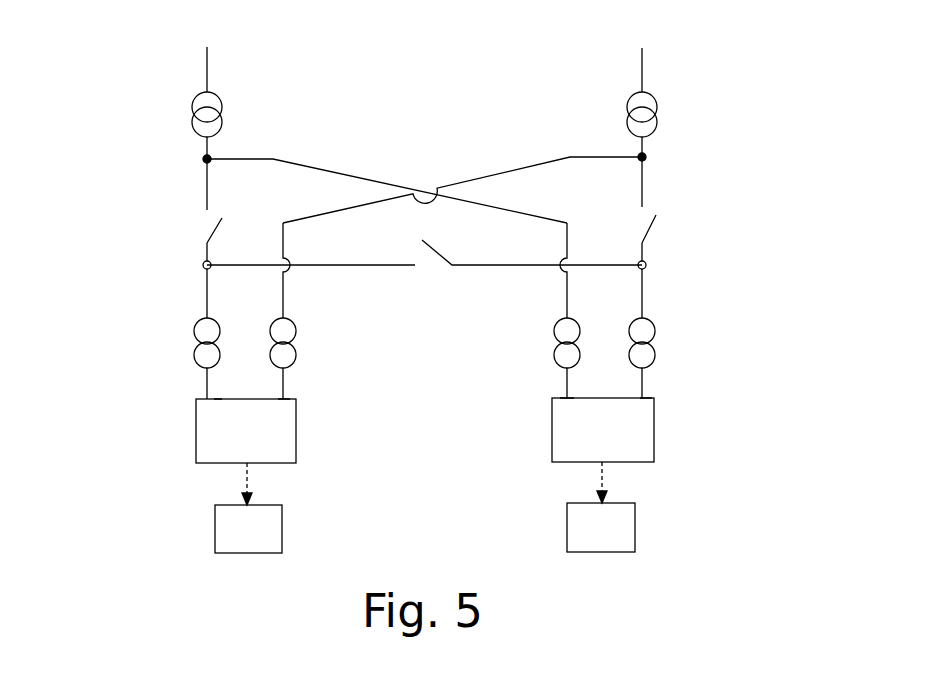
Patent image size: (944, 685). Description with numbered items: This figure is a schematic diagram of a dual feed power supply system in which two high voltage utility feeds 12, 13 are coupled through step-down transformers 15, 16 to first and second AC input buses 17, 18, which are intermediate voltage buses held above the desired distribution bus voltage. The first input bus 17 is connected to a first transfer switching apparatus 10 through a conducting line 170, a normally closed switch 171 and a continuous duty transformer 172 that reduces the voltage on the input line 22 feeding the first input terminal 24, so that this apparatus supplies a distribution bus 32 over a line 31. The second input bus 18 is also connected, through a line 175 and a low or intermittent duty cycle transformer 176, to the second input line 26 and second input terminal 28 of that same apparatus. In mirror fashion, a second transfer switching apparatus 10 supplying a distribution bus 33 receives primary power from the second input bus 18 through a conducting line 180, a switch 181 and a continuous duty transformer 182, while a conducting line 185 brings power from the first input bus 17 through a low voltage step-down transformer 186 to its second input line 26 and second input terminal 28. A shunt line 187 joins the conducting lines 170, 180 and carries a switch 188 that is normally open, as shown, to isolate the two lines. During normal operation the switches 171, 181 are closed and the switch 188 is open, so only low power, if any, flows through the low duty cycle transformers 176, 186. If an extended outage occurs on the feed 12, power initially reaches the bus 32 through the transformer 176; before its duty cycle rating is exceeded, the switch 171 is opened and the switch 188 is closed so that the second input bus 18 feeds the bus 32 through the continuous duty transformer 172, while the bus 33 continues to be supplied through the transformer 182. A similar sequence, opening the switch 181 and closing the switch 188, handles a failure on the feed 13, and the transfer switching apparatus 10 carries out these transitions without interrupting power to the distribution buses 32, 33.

The transfer switching apparatus 10 is at (196, 427).
The utility feed 12 is at (203, 65).
The utility feed 13 is at (645, 55).
The step-down transformer 15 is at (188, 108).
The step-down transformer 16 is at (658, 100).
The AC input bus 17 is at (203, 178).
The AC input bus 18 is at (648, 175).
The conductors 22 is at (205, 385).
The first input terminal 24 is at (222, 397).
The conducting lines 26 is at (288, 377).
The second input terminal 28 is at (288, 397).
The line 31 is at (245, 474).
The distribution bus 32 is at (215, 527).
The distribution bus 33 is at (567, 520).
The conducting line 170 is at (197, 263).
The switch 171 is at (205, 229).
The transformer 172 is at (193, 329).
The line 175 is at (538, 160).
The low or intermittent duty cycle transformer 176 is at (293, 317).
The conducting line 180 is at (648, 262).
The switch 181 is at (655, 217).
The continuous duty transformer 182 is at (666, 327).
The conducting line 185 is at (300, 160).
The low voltage step-down transformer 186 is at (552, 318).
The shunt line 187 is at (342, 263).
The switch 188 is at (422, 240).